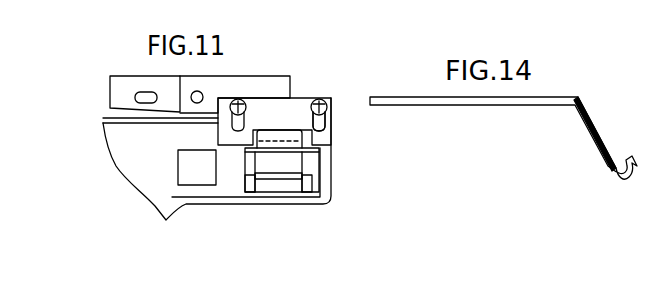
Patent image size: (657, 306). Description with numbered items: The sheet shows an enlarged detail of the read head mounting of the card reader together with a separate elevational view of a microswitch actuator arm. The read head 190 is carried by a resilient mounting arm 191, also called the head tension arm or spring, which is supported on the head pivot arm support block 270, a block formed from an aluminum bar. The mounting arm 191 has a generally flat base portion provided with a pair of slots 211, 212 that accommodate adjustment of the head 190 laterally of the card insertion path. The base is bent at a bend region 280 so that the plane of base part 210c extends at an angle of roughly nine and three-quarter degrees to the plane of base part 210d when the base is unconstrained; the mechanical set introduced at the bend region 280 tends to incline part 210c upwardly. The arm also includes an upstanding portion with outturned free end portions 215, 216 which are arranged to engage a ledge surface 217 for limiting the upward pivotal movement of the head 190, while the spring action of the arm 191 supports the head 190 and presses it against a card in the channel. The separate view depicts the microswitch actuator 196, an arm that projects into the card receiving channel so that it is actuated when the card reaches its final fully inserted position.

In FIG. 11, the head pivot arm support block 270 is at (110, 82).
In FIG. 11, the slot 211 is at (215, 150).
In FIG. 11, the base part 210d is at (300, 106).
In FIG. 11, the mounting arm 191 is at (263, 114).
In FIG. 11, the bend region 280 is at (324, 124).
In FIG. 11, the slot 212 is at (322, 132).
In FIG. 11, the base part 210c is at (290, 160).
In FIG. 11, the ledge surface 217 is at (277, 182).
In FIG. 11, the outturned free end portion 216 is at (251, 181).
In FIG. 11, the read head 190 is at (271, 184).
In FIG. 11, the outturned free end portion 215 is at (313, 194).
In FIG. 14, the microswitch actuator 196 is at (518, 112).